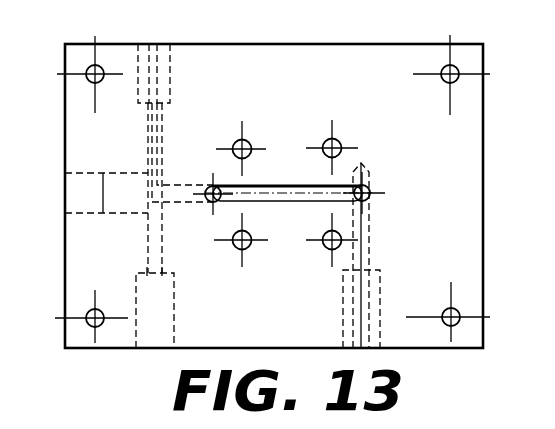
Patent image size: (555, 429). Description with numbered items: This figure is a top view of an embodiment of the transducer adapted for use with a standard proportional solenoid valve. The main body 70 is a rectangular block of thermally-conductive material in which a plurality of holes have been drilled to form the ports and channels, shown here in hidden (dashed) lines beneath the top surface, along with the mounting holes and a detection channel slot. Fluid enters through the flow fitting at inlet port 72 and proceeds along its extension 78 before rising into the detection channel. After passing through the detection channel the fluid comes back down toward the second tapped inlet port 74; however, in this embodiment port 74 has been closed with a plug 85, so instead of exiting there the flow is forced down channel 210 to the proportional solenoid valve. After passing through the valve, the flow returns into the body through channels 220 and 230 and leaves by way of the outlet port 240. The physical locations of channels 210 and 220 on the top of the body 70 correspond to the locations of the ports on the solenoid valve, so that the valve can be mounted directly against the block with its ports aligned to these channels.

The body of the material 70 is at (460, 125).
The inlet port 72 is at (370, 317).
The inlet port 74 is at (124, 182).
The extension 78 is at (363, 227).
The dashed band 85 is at (82, 193).
The channel 210 is at (153, 118).
The channel 220 is at (143, 65).
The channel 230 is at (158, 253).
The outlet port 240 is at (160, 318).